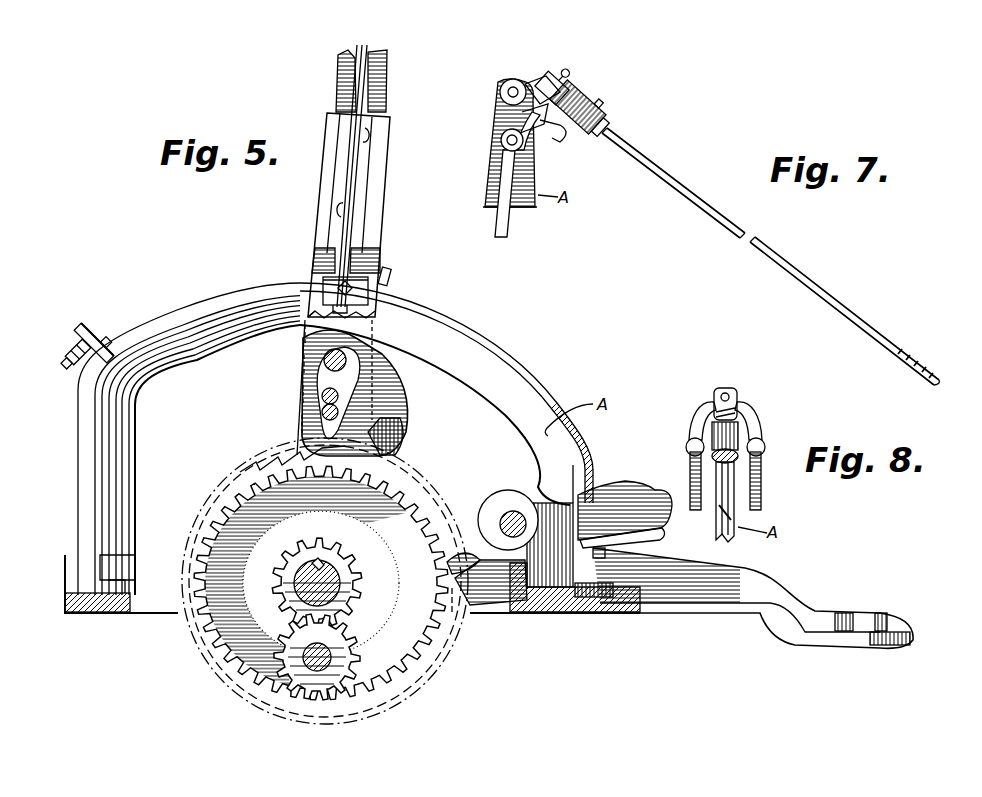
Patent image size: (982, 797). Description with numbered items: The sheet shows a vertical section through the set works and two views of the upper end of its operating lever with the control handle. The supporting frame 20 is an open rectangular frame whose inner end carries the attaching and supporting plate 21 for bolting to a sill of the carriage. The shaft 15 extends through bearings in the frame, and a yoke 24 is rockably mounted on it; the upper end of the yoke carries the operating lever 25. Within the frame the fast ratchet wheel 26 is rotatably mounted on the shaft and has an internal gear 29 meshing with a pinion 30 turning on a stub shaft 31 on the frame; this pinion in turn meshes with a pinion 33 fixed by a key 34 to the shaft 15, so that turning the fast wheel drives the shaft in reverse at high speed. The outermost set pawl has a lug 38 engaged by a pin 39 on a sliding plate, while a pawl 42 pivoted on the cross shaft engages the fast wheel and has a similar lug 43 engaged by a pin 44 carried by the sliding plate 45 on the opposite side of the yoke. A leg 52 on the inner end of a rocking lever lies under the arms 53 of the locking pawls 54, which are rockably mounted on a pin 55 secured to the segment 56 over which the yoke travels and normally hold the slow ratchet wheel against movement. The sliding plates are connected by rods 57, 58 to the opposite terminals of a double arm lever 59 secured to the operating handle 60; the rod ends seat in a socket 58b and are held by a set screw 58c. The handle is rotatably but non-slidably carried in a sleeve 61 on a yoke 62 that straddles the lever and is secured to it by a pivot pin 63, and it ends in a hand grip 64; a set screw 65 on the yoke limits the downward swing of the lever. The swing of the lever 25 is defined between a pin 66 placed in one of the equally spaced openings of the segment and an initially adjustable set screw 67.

In FIG. 5, the shaft 15 is at (352, 571).
In FIG. 5, the supporting frame 20 is at (507, 613).
In FIG. 5, the attaching and supporting plate 21 is at (785, 605).
In FIG. 5, the yoke 24 is at (372, 253).
In FIG. 5, the operating lever 25 is at (383, 103).
In FIG. 7, the operating lever 25 is at (532, 187).
In FIG. 8, the operating lever 25 is at (722, 535).
In FIG. 5, the fast ratchet wheel 26 is at (427, 502).
In FIG. 5, the internal gear 29 is at (450, 612).
In FIG. 5, the pinion 30 is at (340, 653).
In FIG. 5, the stub shaft 31 is at (312, 668).
In FIG. 5, the pinion 33 is at (360, 590).
In FIG. 5, the key 34 is at (320, 562).
In FIG. 5, the lug 38 is at (320, 398).
In FIG. 5, the pin 39 is at (325, 368).
In FIG. 5, the pawl 42 is at (406, 416).
In FIG. 5, the lug 43 is at (300, 446).
In FIG. 5, the pin 44 is at (318, 430).
In FIG. 5, the sliding plate 45 is at (355, 305).
In FIG. 5, the laterally projecting leg 52 is at (605, 556).
In FIG. 5, the arms 53 is at (657, 528).
In FIG. 5, the locking pawls 54 is at (472, 563).
In FIG. 5, the pin 55 is at (517, 513).
In FIG. 5, the segment 56 is at (335, 439).
In FIG. 8, the rod 57 is at (763, 488).
In FIG. 5, the rod 58 is at (355, 182).
In FIG. 7, the rod 58 is at (510, 227).
In FIG. 8, the rod 58 is at (692, 473).
In FIG. 5, the socket 58b is at (325, 282).
In FIG. 5, the set screw 58c is at (310, 308).
In FIG. 7, the double arm lever 59 is at (525, 84).
In FIG. 8, the double arm lever 59 is at (760, 423).
In FIG. 7, the operating handle 60 is at (642, 150).
In FIG. 8, the operating handle 60 is at (732, 503).
In FIG. 7, the sleeve 61 is at (598, 115).
In FIG. 8, the sleeve 61 is at (738, 423).
In FIG. 7, the yoke 62 is at (562, 94).
In FIG. 7, the pivot pin 63 is at (513, 88).
In FIG. 7, the hand grip 64 is at (920, 362).
In FIG. 7, the set screw 65 is at (562, 140).
In FIG. 5, the pin 66 is at (392, 274).
In FIG. 5, the set screw 67 is at (95, 332).